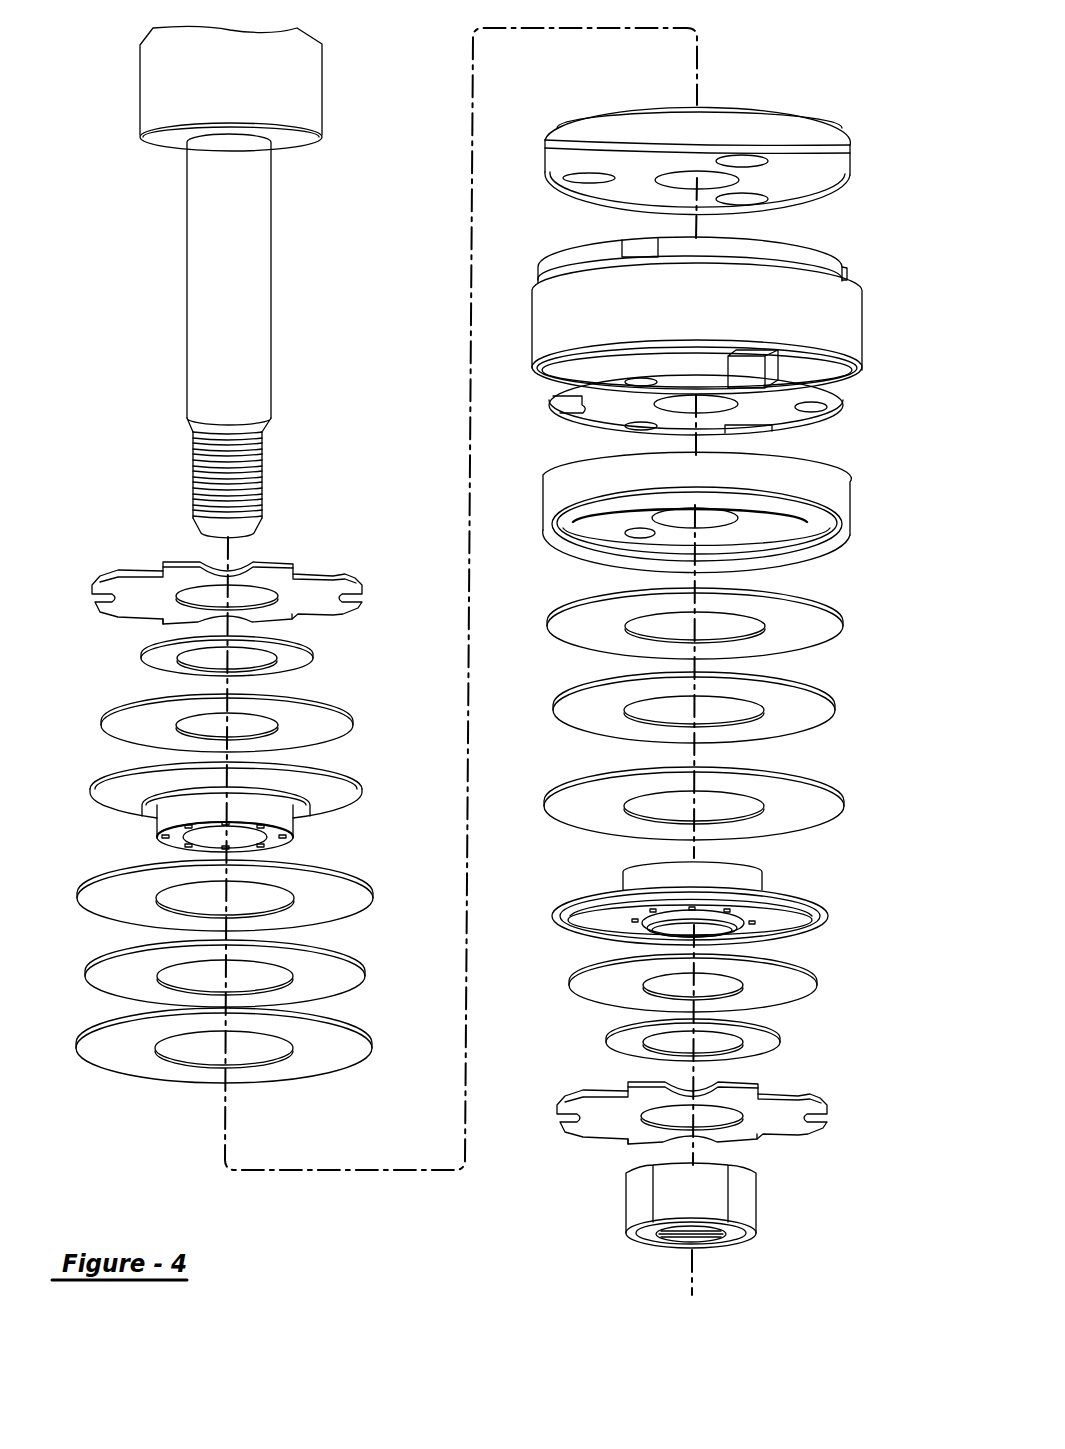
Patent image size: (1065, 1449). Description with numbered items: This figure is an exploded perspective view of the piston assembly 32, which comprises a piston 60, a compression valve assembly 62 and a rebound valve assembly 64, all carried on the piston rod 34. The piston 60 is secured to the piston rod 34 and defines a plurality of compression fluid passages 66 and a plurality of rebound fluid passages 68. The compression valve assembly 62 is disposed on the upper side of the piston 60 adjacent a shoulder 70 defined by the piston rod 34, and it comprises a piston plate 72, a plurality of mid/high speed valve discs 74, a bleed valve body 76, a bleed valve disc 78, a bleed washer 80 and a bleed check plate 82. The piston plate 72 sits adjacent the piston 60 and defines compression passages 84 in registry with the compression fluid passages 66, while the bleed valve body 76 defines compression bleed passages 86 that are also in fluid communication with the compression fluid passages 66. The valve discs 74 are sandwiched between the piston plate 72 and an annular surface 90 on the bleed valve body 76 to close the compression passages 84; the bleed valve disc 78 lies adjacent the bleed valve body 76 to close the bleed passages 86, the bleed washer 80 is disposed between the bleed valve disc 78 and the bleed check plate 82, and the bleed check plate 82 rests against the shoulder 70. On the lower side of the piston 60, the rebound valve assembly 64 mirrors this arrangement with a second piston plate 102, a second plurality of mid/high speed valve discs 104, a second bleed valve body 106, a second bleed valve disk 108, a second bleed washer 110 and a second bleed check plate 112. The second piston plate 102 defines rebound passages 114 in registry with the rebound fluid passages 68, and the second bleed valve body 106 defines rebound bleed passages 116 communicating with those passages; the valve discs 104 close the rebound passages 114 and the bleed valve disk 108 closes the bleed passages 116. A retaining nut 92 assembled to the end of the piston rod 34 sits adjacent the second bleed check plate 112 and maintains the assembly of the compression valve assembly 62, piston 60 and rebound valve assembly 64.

The piston assembly 32 is at (862, 42).
The piston rod 34 is at (241, 92).
The piston 60 is at (838, 318).
The compression valve assembly 62 is at (152, 1139).
The rebound valve assembly 64 is at (566, 1203).
The compression fluid passages 66 is at (555, 404).
The rebound fluid passages 68 is at (645, 256).
The shoulder 70 is at (172, 143).
The piston plate 72 is at (725, 171).
The mid/high speed valve discs 74 is at (117, 910).
The bleed valve body 76 is at (218, 810).
The bleed valve disc 78 is at (142, 720).
The bleed washer 80 is at (155, 660).
The bleed check plate 82 is at (113, 582).
The compression passages 84 is at (753, 202).
The compression bleed passages 86 is at (178, 838).
The annular surface 90 is at (303, 812).
The retaining nut 92 is at (757, 1203).
The second piston plate 102 is at (700, 519).
The second plurality of mid/high speed valve discs 104 is at (814, 638).
The second bleed valve body 106 is at (700, 911).
The second bleed valve disk 108 is at (782, 990).
The second bleed washer 110 is at (755, 1040).
The second bleed check plate 112 is at (812, 1130).
The rebound passages 114 is at (637, 530).
The rebound bleed passages 116 is at (638, 917).